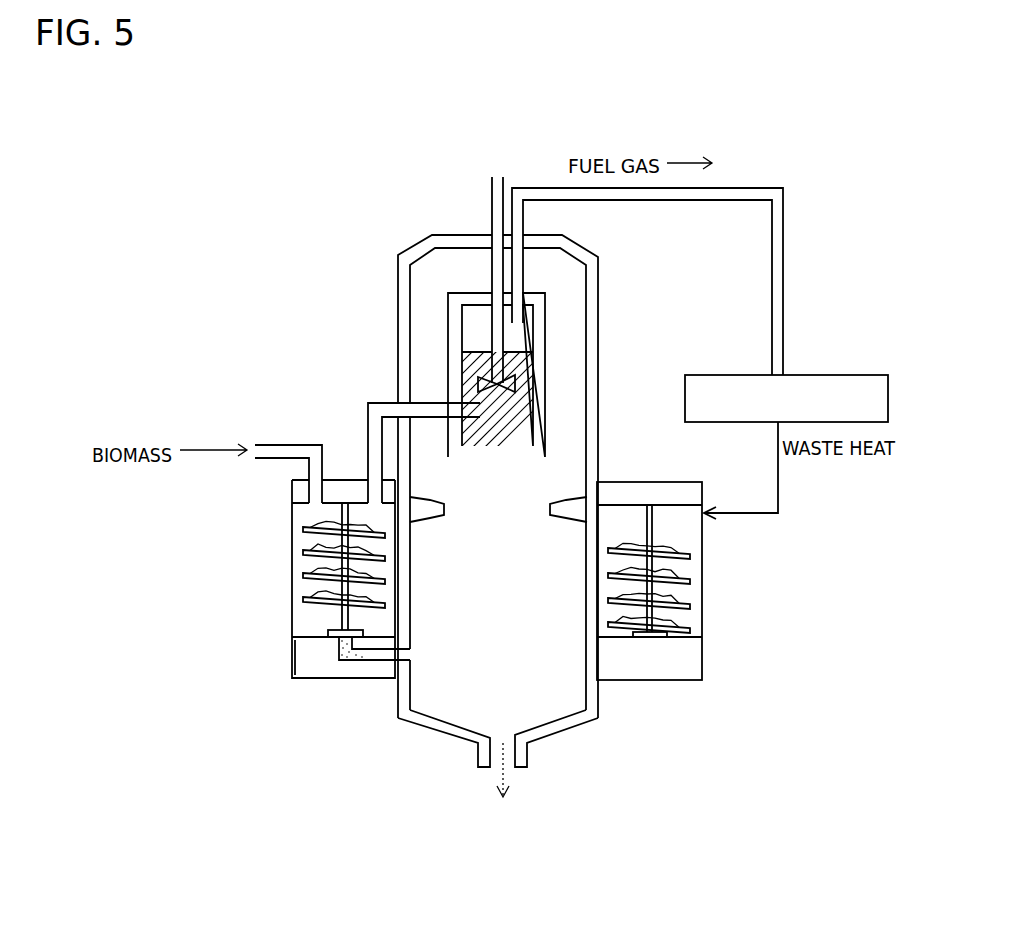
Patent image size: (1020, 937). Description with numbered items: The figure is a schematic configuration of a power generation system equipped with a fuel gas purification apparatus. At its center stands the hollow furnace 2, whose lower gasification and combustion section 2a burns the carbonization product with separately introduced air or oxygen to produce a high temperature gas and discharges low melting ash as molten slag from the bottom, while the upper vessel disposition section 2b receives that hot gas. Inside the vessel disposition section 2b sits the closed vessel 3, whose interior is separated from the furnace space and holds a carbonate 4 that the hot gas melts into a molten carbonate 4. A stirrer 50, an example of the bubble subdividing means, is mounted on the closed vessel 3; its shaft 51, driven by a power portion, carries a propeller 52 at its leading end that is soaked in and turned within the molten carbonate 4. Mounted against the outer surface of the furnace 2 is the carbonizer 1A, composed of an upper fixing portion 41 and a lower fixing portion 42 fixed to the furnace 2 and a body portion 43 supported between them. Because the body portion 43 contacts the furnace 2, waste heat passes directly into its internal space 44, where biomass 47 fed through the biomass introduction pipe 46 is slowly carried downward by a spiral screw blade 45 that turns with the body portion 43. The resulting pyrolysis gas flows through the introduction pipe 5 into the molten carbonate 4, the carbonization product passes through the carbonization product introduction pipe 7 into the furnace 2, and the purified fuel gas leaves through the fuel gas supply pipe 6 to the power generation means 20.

The carbonizer 1A is at (162, 493).
The furnace 2 is at (422, 238).
The gasification and combustion section 2a is at (548, 687).
The vessel disposition section 2b is at (422, 285).
The closed vessel 3 is at (448, 317).
The carbonate 4 is at (467, 397).
The introduction pipe 5 is at (368, 425).
The fuel gas supply pipe 6 is at (543, 188).
The carbonization product introduction pipe 7 is at (387, 660).
The power generation means 20 is at (820, 375).
The upper fixing portion 41 is at (288, 488).
The lower fixing portion 42 is at (290, 653).
The body portion 43 is at (290, 552).
The internal space 44 is at (308, 617).
The screw blade 45 is at (690, 555).
The biomass introduction pipe 46 is at (295, 443).
The biomass 47 is at (628, 542).
The stirrer 50 is at (472, 207).
The shaft 51 is at (492, 227).
The propeller 52 is at (468, 378).